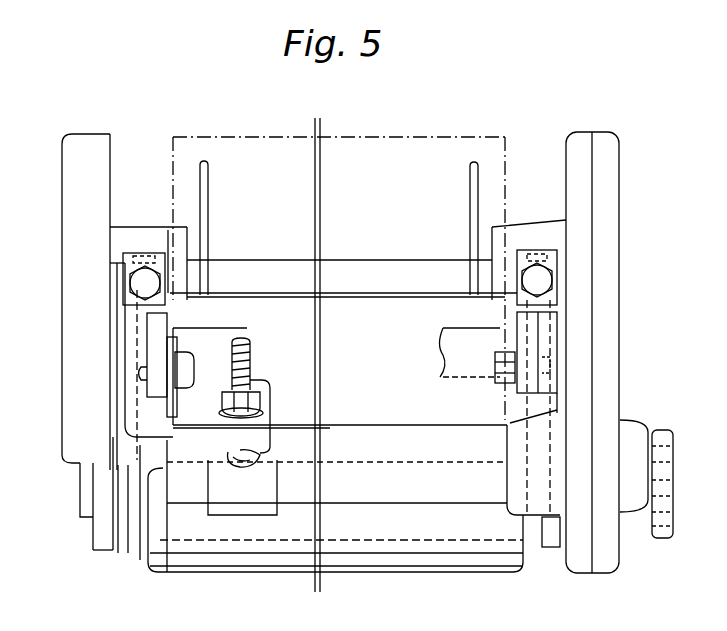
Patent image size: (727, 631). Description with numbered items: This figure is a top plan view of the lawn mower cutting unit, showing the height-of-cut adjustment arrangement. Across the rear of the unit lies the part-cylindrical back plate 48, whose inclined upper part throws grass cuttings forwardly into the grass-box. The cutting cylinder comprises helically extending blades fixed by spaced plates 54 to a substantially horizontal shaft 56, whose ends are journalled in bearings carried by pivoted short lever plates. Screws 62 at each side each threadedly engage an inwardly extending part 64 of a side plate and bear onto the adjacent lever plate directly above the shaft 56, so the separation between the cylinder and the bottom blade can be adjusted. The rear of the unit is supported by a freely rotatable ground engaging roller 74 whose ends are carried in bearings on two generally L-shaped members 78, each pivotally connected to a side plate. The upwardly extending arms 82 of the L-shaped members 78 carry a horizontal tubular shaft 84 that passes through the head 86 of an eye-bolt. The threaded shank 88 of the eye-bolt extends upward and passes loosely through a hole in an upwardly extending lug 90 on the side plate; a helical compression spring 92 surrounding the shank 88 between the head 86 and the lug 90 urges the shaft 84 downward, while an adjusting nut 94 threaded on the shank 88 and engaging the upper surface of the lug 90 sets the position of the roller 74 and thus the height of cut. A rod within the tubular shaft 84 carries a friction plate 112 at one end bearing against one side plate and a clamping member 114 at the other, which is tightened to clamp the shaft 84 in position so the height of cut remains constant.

The part-cylindrical back plate 48 is at (427, 302).
The spaced plates 54 is at (208, 197).
The shaft 56 is at (453, 270).
The screws 62 is at (148, 275).
The inwardly extending part 64 is at (135, 318).
The ground engaging roller 74 is at (338, 542).
The L-shaped members 78 is at (130, 540).
The upwardly extending arms 82 is at (120, 525).
The horizontal tubular shaft 84 is at (385, 493).
The head of eye-bolt 86 is at (208, 509).
The threaded shank 88 is at (255, 366).
The lug 90 is at (214, 397).
The helical compression spring 92 is at (255, 465).
The adjusting nut 94 is at (258, 406).
The friction plate 112 is at (82, 493).
The clamping member 114 is at (665, 540).